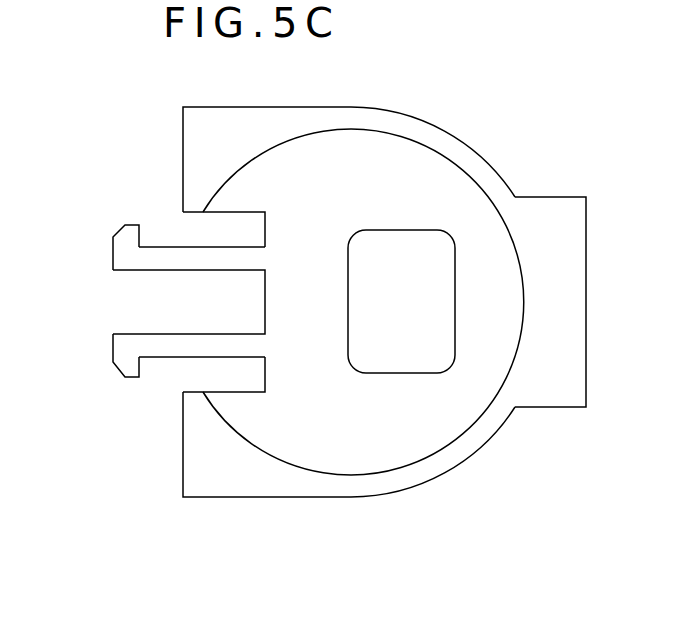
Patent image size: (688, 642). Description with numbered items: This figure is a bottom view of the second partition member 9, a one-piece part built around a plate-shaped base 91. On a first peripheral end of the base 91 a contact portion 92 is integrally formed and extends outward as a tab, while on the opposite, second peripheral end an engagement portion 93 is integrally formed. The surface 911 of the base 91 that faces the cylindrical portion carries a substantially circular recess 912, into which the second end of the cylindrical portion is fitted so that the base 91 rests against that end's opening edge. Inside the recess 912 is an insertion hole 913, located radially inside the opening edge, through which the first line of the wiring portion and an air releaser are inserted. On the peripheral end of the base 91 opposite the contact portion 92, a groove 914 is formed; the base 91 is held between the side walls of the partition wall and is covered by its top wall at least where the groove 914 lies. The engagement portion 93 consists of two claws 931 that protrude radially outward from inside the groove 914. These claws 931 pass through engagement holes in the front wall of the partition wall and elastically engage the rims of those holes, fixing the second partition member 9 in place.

The second partition member 9 is at (590, 146).
The base 91 is at (327, 120).
The contact portion 92 is at (541, 213).
The engagement portion 93 is at (114, 206).
The surface 911 is at (243, 477).
The recess 912 is at (336, 472).
The insertion hole 913 is at (396, 373).
The groove 914 is at (227, 392).
The claw 931 is at (113, 253).